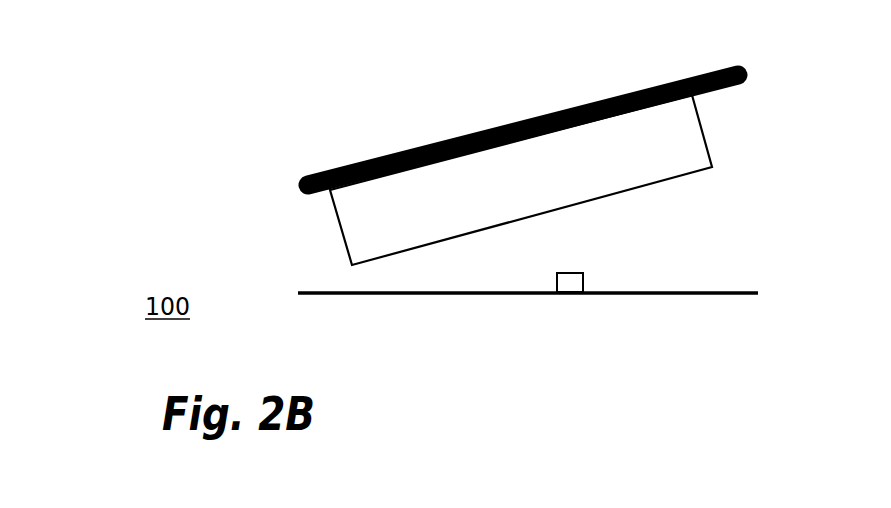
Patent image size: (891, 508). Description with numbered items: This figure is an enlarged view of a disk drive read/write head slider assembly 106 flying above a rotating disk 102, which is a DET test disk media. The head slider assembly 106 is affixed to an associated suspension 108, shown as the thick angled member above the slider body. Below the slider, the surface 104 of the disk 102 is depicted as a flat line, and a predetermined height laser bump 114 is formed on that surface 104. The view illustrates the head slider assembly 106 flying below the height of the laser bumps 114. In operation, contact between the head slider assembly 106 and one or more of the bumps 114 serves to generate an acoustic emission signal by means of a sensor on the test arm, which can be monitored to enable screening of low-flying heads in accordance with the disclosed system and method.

The disk 102 is at (609, 340).
The surface 104 is at (741, 291).
The read/write head slider assembly 106 is at (256, 250).
The suspension 108 is at (694, 76).
The laser bumps 114 is at (570, 271).